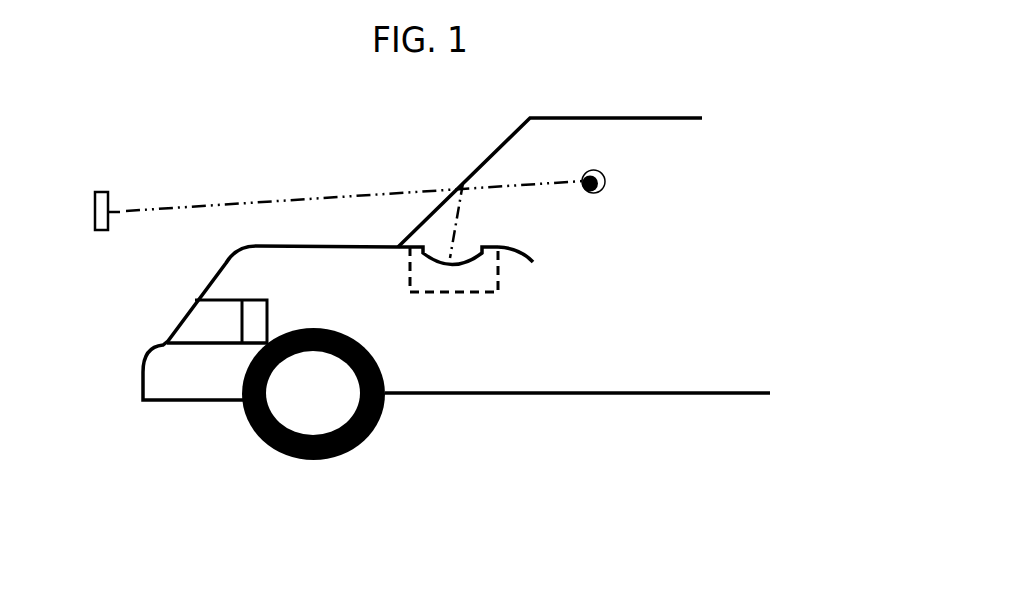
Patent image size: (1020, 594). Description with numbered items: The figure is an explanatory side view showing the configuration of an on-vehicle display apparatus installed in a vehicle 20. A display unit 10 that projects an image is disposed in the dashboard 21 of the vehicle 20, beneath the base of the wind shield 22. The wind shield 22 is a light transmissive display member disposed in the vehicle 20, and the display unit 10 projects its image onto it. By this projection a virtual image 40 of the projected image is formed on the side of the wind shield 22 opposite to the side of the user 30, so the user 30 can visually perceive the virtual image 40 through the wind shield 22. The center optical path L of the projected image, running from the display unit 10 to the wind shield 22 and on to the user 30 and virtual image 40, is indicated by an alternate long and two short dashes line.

The display unit 10 is at (458, 295).
The vehicle 20 is at (190, 372).
The dashboard 21 is at (523, 257).
The wind shield 22 is at (492, 155).
The user 30 is at (588, 172).
The virtual image 40 is at (100, 190).
The center optical path L is at (460, 210).